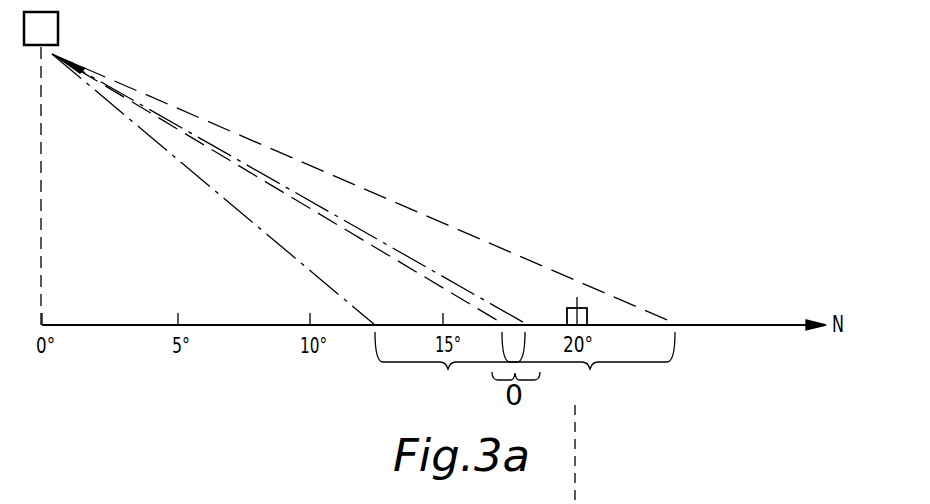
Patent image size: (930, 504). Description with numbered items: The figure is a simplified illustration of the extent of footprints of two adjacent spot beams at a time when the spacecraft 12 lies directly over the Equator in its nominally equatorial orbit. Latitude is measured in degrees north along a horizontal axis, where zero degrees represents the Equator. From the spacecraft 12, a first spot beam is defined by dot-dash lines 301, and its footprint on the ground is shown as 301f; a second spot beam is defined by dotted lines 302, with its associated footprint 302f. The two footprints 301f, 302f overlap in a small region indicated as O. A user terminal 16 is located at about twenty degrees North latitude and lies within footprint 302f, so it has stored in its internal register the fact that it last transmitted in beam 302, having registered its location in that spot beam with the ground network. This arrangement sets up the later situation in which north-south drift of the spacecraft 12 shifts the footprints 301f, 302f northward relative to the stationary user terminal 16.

The spacecraft 12 is at (59, 30).
The user terminal 16 is at (567, 309).
The first spot beam 301 is at (262, 231).
The second spot beam 302 is at (412, 265).
The footprint of first spot beam 301f is at (450, 369).
The footprint of second spot beam 302f is at (588, 369).